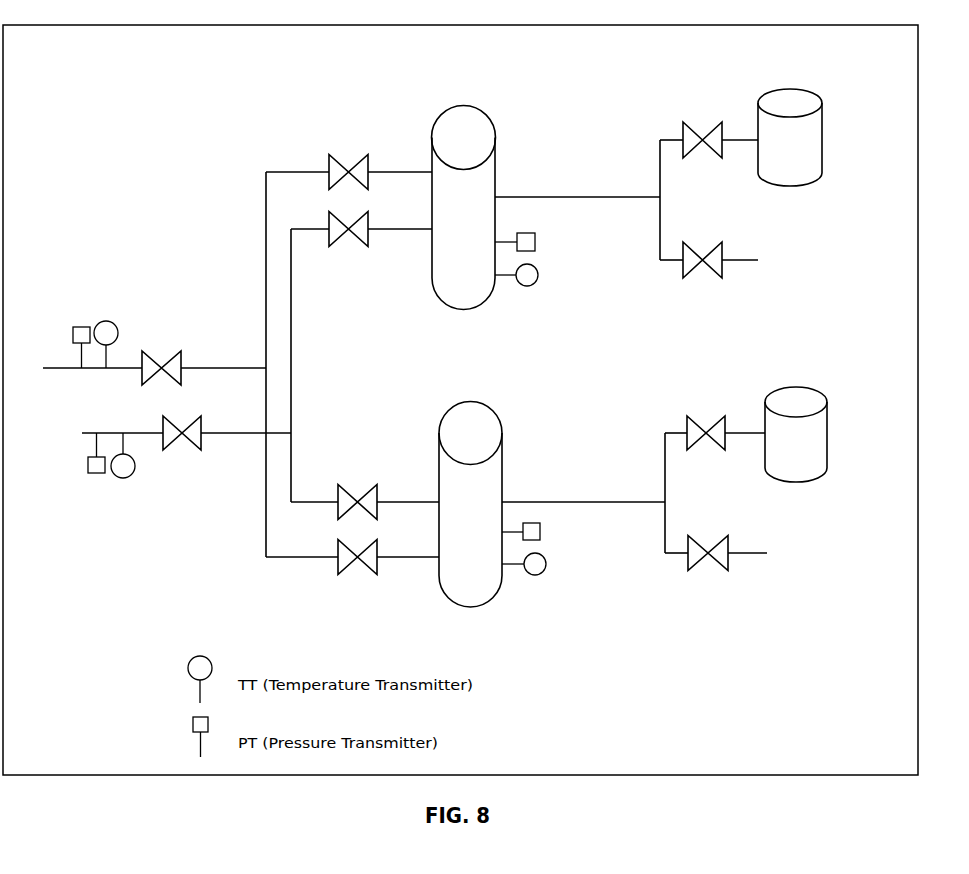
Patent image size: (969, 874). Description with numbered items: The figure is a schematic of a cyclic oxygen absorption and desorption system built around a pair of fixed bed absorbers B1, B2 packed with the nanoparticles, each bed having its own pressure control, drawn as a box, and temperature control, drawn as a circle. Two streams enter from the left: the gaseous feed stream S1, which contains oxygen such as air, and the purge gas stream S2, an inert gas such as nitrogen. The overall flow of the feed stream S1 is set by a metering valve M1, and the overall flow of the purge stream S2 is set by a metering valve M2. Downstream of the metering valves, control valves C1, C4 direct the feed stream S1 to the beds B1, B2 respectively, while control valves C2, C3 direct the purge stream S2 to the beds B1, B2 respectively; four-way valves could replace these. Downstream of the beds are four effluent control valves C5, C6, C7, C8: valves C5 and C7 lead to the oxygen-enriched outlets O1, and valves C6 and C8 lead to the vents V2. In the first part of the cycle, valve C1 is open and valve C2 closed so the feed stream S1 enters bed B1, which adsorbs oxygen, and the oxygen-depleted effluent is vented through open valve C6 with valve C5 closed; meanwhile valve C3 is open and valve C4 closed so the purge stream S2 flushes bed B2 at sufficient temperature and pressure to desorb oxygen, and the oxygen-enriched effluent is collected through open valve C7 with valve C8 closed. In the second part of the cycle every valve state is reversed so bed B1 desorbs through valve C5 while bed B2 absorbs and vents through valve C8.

The gaseous feed stream S1 is at (141, 347).
The purge gas stream S2 is at (164, 453).
The metering valve M1 is at (166, 364).
The metering valve M2 is at (185, 440).
The control valve C1 is at (355, 163).
The control valve C2 is at (355, 238).
The control valve C3 is at (352, 490).
The control valve C4 is at (349, 566).
The effluent control valve C5 is at (698, 131).
The effluent control valve C6 is at (695, 264).
The effluent control valve C7 is at (712, 420).
The effluent control valve C8 is at (702, 562).
The fixed bed absorber B1 is at (461, 313).
The fixed bed absorber B2 is at (467, 610).
The O2 enriched product outlet/storage O1 is at (772, 88).
The vent V2 is at (790, 408).